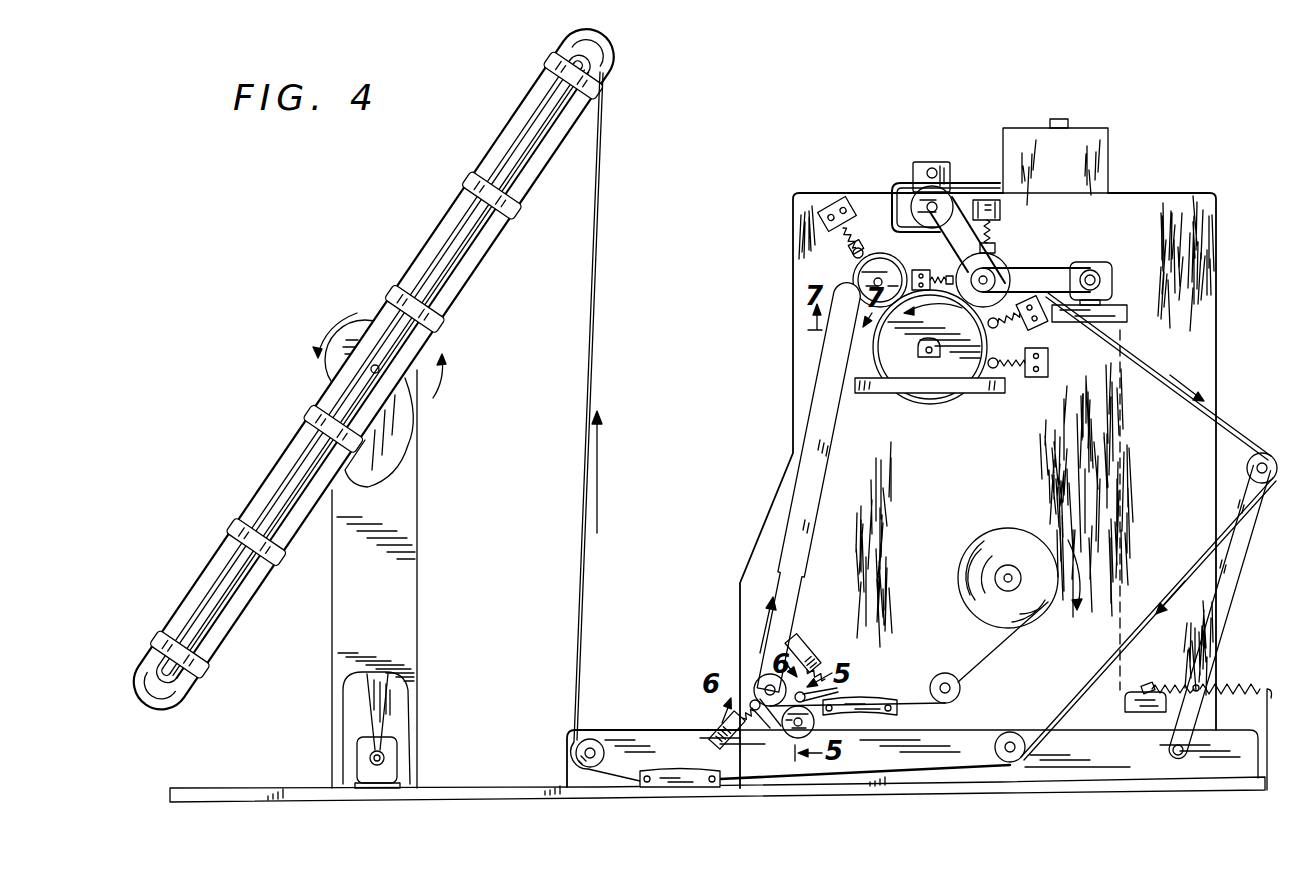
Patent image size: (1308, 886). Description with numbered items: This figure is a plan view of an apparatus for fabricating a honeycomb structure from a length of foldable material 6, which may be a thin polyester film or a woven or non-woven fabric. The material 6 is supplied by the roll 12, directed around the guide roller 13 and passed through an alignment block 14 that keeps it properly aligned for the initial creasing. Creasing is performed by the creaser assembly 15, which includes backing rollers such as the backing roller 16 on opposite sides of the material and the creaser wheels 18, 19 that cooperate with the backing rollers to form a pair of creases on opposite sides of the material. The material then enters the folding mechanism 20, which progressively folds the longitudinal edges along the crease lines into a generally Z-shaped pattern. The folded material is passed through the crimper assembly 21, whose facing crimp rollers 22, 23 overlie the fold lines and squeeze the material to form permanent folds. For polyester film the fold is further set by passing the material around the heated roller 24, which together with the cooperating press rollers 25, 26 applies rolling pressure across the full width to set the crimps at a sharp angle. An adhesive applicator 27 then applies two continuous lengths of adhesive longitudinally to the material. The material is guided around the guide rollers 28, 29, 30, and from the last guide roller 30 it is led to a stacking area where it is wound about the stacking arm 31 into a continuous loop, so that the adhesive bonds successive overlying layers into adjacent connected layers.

The foldable material 6 is at (995, 657).
The supply roll 12 is at (1002, 540).
The guide roller 13 is at (942, 676).
The alignment block 14 is at (898, 709).
The creaser assembly 15 is at (747, 673).
The backing roller 16 is at (782, 737).
The creaser wheel 18 is at (840, 699).
The creaser wheel 19 is at (750, 701).
The folding mechanism 20 is at (818, 410).
The crimper assembly 21 is at (863, 218).
The crimp roller 22 is at (855, 273).
The crimp roller 23 is at (854, 255).
The heated roller 24 is at (927, 405).
The press roller 25 is at (998, 368).
The press roller 26 is at (999, 328).
The adhesive applicator 27 is at (977, 132).
The guide roller 28 is at (1295, 438).
The guide roller 29 is at (1017, 731).
The guide roller 30 is at (589, 740).
The stacking arm 31 is at (397, 281).